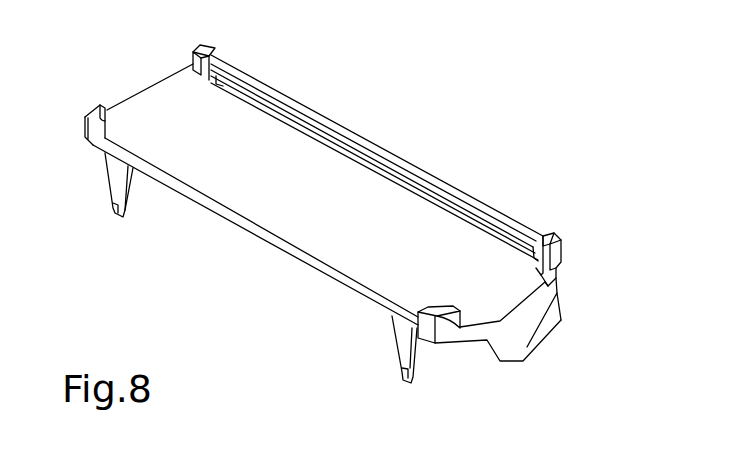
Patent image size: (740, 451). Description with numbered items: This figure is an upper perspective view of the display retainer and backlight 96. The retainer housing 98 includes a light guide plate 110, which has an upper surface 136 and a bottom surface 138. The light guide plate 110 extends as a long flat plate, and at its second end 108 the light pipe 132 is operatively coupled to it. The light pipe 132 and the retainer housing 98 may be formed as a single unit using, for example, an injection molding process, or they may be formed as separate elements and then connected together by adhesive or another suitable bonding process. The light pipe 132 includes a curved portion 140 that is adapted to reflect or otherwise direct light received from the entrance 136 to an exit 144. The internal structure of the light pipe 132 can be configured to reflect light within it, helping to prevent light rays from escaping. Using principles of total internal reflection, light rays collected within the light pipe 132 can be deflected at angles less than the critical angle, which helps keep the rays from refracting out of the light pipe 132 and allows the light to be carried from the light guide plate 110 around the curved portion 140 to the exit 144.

The backlight 96 is at (258, 73).
The retainer housing 98 is at (436, 349).
The second end 108 is at (470, 357).
The light guide plate 110 is at (143, 105).
The light pipe 132 is at (547, 292).
The upper surface 136 is at (185, 88).
The bottom surface 138 is at (254, 238).
The curved portion 140 is at (563, 313).
The exit 144 is at (502, 292).